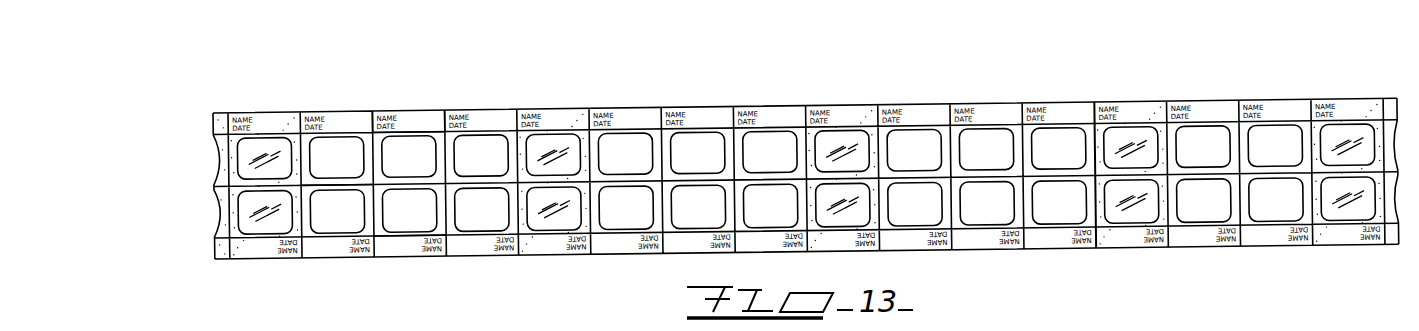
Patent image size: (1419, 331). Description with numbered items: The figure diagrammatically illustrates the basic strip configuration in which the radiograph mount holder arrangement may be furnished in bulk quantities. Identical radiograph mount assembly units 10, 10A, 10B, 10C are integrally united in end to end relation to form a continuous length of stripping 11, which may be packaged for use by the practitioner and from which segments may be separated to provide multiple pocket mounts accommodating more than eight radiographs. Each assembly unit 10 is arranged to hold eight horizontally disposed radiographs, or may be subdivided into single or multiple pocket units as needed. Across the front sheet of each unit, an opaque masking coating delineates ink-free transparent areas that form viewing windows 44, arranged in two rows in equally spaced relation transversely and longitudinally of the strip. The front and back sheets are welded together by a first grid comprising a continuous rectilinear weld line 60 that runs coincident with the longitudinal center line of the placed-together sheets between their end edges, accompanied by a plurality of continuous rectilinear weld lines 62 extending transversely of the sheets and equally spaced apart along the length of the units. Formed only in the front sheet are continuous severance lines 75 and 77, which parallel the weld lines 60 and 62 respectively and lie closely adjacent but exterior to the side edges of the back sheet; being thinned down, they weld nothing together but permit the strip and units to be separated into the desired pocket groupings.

The radiograph mount assembly unit 10 is at (517, 104).
The radiograph mount assembly unit 10A is at (805, 104).
The radiograph mount assembly unit 10B is at (806, 104).
The radiograph mount assembly unit 10C is at (1095, 104).
The stripping 11 is at (1094, 90).
The viewing windows 44 is at (266, 139).
The continuous rectilinear weld line 60 is at (329, 188).
The continuous rectilinear weld lines 62 is at (513, 217).
The severance line 75 is at (414, 135).
The severance lines 77 is at (394, 240).